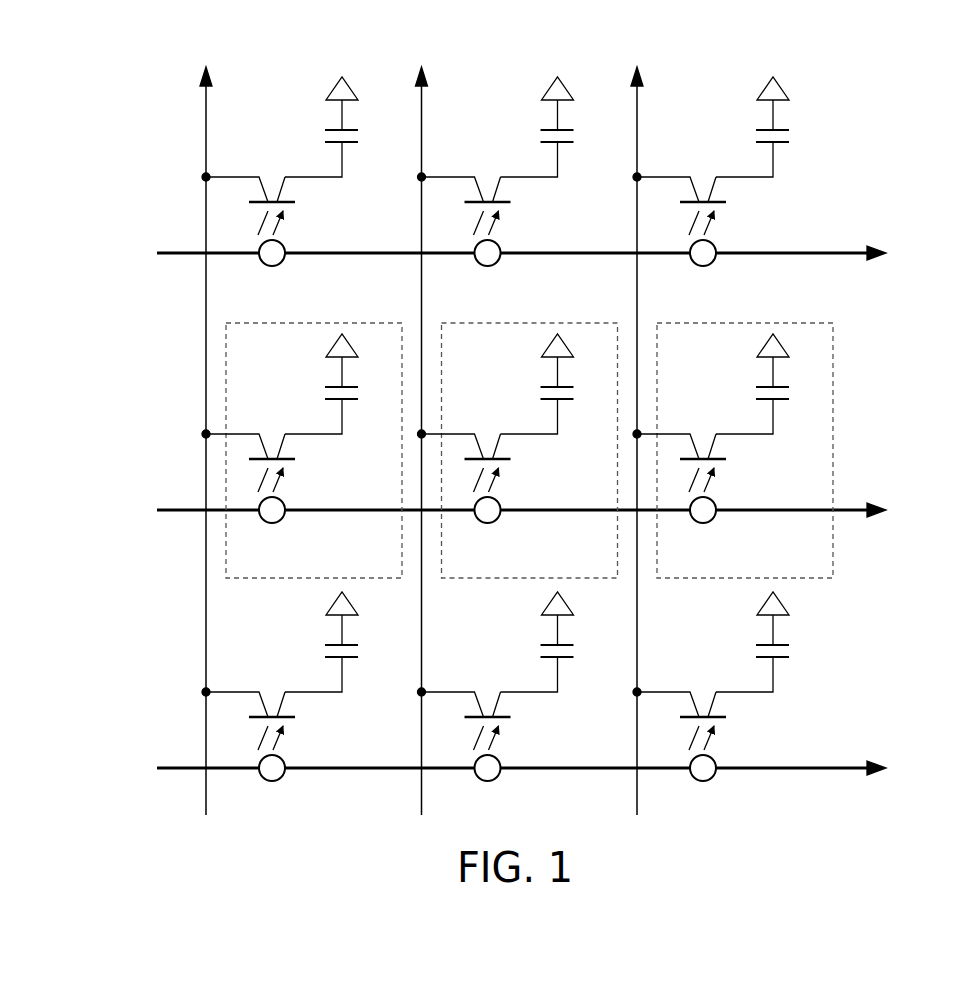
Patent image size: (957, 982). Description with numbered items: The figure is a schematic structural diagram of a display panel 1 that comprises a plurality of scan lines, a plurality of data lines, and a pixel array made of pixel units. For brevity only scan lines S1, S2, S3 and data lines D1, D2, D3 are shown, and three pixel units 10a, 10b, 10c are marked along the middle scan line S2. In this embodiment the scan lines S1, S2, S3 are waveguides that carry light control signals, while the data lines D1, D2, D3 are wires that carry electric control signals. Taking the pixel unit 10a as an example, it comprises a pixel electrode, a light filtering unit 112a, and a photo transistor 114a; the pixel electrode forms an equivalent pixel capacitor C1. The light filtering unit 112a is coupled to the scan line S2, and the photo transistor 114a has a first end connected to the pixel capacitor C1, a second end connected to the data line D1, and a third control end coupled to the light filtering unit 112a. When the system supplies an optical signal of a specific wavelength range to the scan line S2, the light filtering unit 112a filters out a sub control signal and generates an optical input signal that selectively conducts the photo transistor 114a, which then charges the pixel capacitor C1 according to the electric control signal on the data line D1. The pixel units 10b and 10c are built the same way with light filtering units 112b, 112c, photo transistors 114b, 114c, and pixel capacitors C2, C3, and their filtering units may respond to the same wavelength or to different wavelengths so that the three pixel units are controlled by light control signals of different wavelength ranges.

The display panel 1 is at (928, 62).
The pixel unit 10a is at (333, 322).
The pixel unit 10b is at (548, 322).
The pixel unit 10c is at (762, 322).
The light filtering unit 112a is at (272, 523).
The light filtering unit 112b is at (488, 523).
The light filtering unit 112c is at (703, 523).
The photo transistor 114a is at (273, 432).
The photo transistor 114b is at (488, 432).
The photo transistor 114c is at (704, 432).
The pixel capacitor C1 is at (357, 370).
The pixel capacitor C2 is at (572, 370).
The pixel capacitor C3 is at (787, 370).
The scan line S1 is at (505, 256).
The scan line S2 is at (505, 513).
The scan line S3 is at (505, 771).
The data line D1 is at (204, 456).
The data line D2 is at (421, 456).
The data line D3 is at (636, 456).